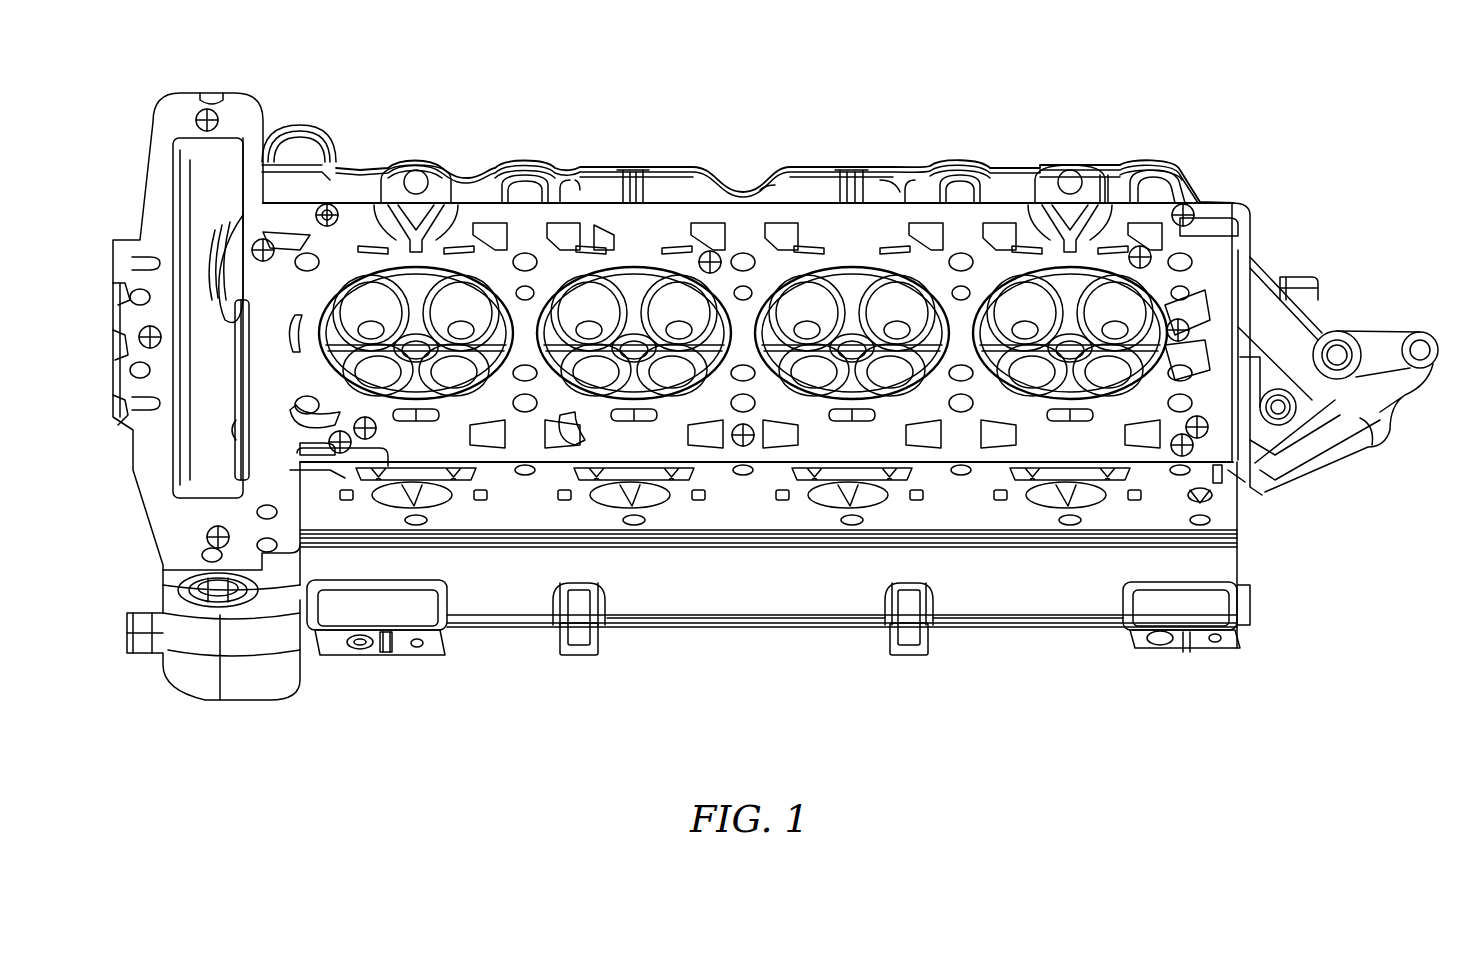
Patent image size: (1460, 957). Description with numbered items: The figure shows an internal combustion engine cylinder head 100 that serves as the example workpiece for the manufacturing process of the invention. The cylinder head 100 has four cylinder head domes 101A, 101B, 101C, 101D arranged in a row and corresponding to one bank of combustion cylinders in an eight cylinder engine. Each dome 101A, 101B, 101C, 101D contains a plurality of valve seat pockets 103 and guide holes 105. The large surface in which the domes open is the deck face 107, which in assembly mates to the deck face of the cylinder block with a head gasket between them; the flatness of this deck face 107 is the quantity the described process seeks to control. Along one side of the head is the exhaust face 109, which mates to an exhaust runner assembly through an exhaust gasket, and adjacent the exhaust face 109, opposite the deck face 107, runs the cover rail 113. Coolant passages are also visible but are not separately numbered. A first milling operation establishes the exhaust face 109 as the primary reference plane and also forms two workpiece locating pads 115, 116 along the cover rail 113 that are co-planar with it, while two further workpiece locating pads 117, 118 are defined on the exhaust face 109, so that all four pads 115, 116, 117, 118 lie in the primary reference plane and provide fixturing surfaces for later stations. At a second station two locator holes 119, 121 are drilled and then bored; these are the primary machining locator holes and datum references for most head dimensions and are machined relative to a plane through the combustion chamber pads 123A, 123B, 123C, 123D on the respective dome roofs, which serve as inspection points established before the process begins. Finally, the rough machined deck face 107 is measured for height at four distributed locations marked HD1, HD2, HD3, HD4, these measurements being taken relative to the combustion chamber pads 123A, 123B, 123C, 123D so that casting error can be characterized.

The cylinder head 100 is at (1103, 93).
The deck face height measurement location HD1 is at (327, 205).
The deck face height measurement location HD2 is at (1190, 213).
The deck face height measurement location HD3 is at (1175, 450).
The deck face height measurement location HD4 is at (338, 452).
The cylinder head dome 101A is at (433, 242).
The cylinder head dome 101B is at (637, 266).
The cylinder head dome 101C is at (852, 263).
The cylinder head dome 101D is at (1070, 256).
The valve seat pocket 103 is at (477, 216).
The guide hole 105 is at (488, 234).
The deck face 107 is at (636, 175).
The exhaust face 109 is at (540, 508).
The cover rail 113 is at (728, 598).
The workpiece locating pad 115 is at (393, 647).
The workpiece locating pad 116 is at (1205, 642).
The workpiece locating pad 117 is at (297, 466).
The workpiece locating pad 118 is at (1222, 478).
The locator hole 119 is at (360, 650).
The locator hole 121 is at (1160, 645).
The inspection point (combustion chamber pad) 123A is at (361, 218).
The inspection point (combustion chamber pad) 123B is at (589, 242).
The inspection point (combustion chamber pad) 123C is at (807, 243).
The inspection point (combustion chamber pad) 123D is at (1119, 232).